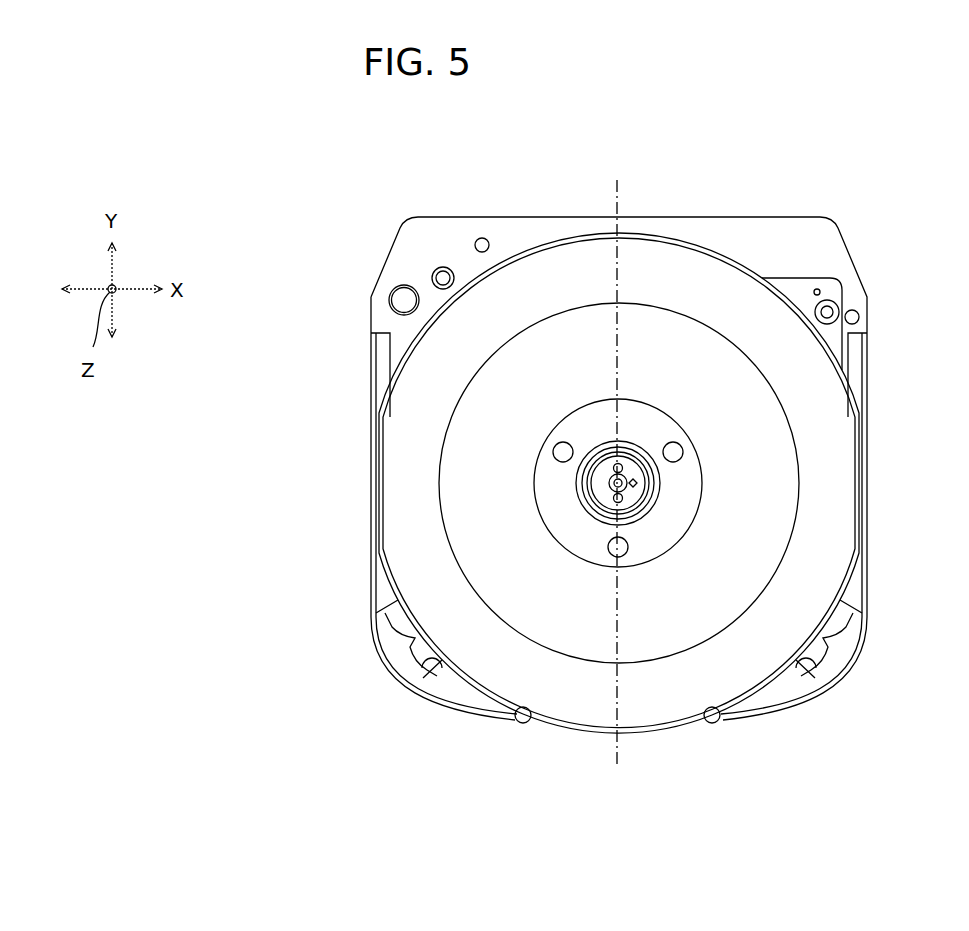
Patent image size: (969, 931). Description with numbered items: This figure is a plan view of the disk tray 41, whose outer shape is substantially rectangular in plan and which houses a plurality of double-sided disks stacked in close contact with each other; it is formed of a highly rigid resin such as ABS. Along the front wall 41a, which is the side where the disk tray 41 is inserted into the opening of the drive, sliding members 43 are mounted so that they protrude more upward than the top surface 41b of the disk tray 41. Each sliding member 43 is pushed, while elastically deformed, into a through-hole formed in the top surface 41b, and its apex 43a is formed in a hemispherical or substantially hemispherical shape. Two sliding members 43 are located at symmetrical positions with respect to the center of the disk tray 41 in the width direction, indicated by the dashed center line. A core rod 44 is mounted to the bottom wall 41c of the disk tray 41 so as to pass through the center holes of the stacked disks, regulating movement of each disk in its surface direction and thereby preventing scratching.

The disk tray 41 is at (792, 228).
The front wall 41a is at (731, 740).
The top surface 41b is at (835, 263).
The bottom wall 41c is at (804, 384).
The sliding member 43 is at (528, 722).
The apex 43a is at (517, 727).
The core rod 44 is at (598, 477).